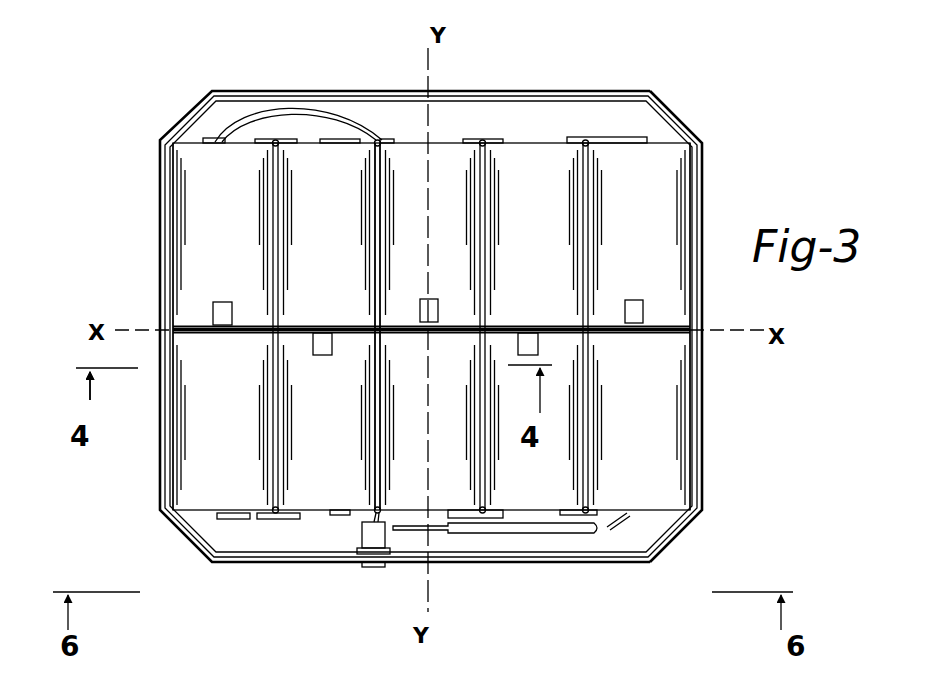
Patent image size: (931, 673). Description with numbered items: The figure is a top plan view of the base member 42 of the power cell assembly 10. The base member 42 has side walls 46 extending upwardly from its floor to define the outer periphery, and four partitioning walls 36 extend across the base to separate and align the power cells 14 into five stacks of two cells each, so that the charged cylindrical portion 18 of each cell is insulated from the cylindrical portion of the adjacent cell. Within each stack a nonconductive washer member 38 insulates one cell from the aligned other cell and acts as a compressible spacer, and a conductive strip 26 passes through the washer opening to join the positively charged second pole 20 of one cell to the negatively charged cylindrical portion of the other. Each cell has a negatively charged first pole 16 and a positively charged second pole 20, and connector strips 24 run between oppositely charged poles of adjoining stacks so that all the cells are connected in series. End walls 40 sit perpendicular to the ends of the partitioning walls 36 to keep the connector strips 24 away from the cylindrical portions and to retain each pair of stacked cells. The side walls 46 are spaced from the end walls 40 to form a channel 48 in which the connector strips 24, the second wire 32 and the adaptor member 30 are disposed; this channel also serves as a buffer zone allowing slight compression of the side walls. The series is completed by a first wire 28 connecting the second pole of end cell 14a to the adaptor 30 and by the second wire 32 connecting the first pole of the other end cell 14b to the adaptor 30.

The assembly 10 is at (217, 52).
The power cells 14 is at (241, 350).
The end cell 14a is at (167, 203).
The other end cell 14b is at (695, 449).
The first pole 16 is at (310, 140).
The charged cylindrical portion 18 is at (508, 193).
The second pole 20 is at (194, 142).
The connector strips 24 is at (387, 133).
The conductive strips 26 is at (224, 300).
The first wire 28 is at (341, 116).
The adaptor member 30 is at (366, 532).
The second wire 32 is at (593, 531).
The partitioning walls 36 is at (363, 483).
The washer members 38 is at (595, 325).
The end walls 40 is at (270, 140).
The base member 42 is at (708, 161).
The side walls 46 is at (477, 140).
The channel 48 is at (543, 108).